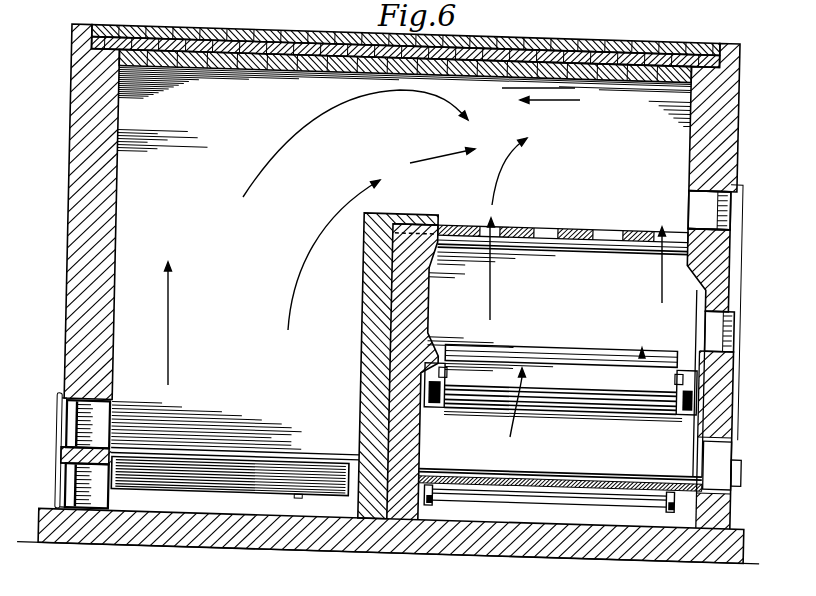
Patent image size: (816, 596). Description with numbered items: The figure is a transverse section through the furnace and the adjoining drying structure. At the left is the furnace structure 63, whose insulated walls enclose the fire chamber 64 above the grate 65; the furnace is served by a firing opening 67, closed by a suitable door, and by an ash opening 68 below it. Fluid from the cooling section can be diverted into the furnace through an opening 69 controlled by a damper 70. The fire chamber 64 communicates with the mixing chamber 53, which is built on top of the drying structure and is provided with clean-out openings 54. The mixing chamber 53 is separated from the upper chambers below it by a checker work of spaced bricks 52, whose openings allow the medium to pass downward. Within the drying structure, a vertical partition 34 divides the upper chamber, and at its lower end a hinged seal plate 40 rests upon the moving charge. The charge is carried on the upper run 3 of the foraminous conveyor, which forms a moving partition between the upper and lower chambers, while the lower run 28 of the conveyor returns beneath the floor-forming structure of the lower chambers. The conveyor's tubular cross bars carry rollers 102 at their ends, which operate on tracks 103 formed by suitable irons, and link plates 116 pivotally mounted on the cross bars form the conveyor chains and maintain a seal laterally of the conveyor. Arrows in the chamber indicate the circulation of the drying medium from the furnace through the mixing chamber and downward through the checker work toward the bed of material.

The upper run of the conveyor 3 is at (615, 408).
The lower run of the conveyor 28 is at (537, 506).
The vertical partition 34 is at (672, 302).
The hinged seal plate 40 is at (611, 372).
The bricks 52 is at (575, 228).
The mixing chamber 53 is at (678, 141).
The clean-out openings 54 is at (716, 213).
The furnace structure 63 is at (75, 201).
The fire chamber 64 is at (140, 291).
The grate 65 is at (263, 458).
The firing opening 67 is at (92, 425).
The ash opening 68 is at (90, 487).
The opening 69 is at (305, 495).
The damper 70 is at (265, 482).
The rollers 102 is at (695, 399).
The tracks 103 is at (688, 424).
The link plates 116 is at (678, 410).